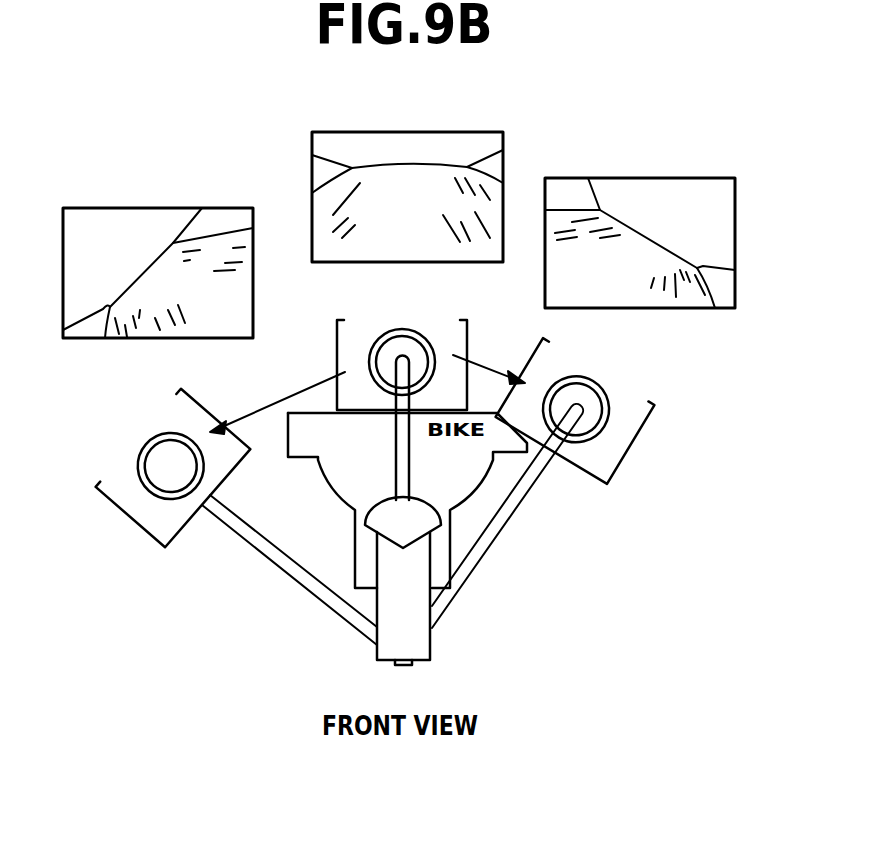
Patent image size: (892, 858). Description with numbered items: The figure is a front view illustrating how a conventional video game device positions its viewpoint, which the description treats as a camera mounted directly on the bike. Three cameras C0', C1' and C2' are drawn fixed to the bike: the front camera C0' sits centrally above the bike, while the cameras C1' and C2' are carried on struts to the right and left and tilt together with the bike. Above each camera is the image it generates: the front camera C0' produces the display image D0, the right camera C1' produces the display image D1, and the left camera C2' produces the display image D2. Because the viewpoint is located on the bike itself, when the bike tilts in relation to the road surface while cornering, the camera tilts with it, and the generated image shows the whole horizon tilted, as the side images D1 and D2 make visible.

The front camera display image D0 is at (407, 296).
The right camera display image D1 is at (643, 348).
The left camera display image D2 is at (158, 378).
The front camera C0' is at (367, 386).
The right camera C1' is at (574, 475).
The left camera C2' is at (229, 494).